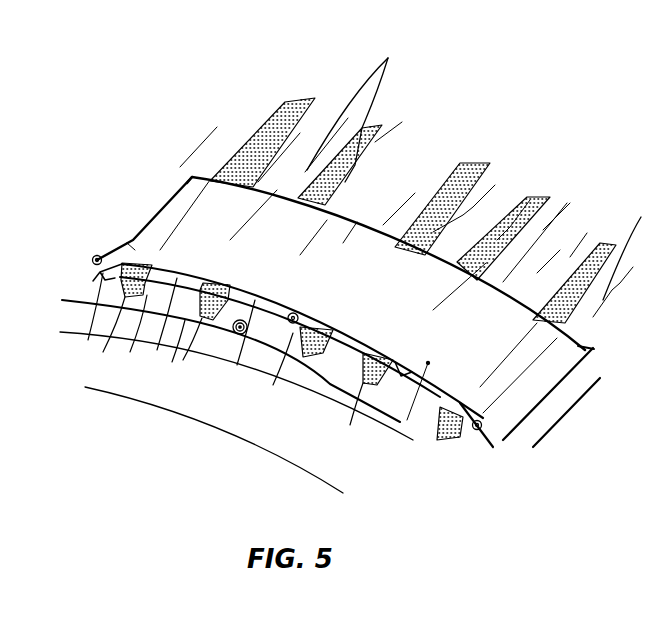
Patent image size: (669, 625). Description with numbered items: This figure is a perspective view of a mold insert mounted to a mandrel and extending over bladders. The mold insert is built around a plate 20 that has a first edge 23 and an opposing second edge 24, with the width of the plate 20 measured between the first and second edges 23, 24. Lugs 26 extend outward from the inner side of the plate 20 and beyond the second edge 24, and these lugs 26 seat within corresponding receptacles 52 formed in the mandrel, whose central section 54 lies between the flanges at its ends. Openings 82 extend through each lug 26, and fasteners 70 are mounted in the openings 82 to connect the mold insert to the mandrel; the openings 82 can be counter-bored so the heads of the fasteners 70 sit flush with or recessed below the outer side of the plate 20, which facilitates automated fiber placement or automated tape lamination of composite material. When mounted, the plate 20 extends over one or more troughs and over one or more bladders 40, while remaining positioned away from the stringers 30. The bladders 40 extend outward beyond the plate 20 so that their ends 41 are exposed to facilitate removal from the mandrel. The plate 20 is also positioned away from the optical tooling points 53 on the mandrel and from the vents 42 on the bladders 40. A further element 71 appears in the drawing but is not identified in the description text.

The plate 20 is at (380, 187).
The first edge 23 is at (228, 165).
The second edge 24 is at (185, 320).
The lugs 26 is at (100, 277).
The stringers 30 is at (641, 217).
The bladders 40 is at (433, 200).
The ends 41 is at (127, 307).
The vents 42 is at (147, 312).
The receptacles 52 is at (105, 273).
The optical tooling points 53 is at (92, 261).
The central section 54 is at (397, 150).
The fasteners 70 is at (135, 250).
The pin 71 is at (428, 363).
The openings 82 is at (133, 240).